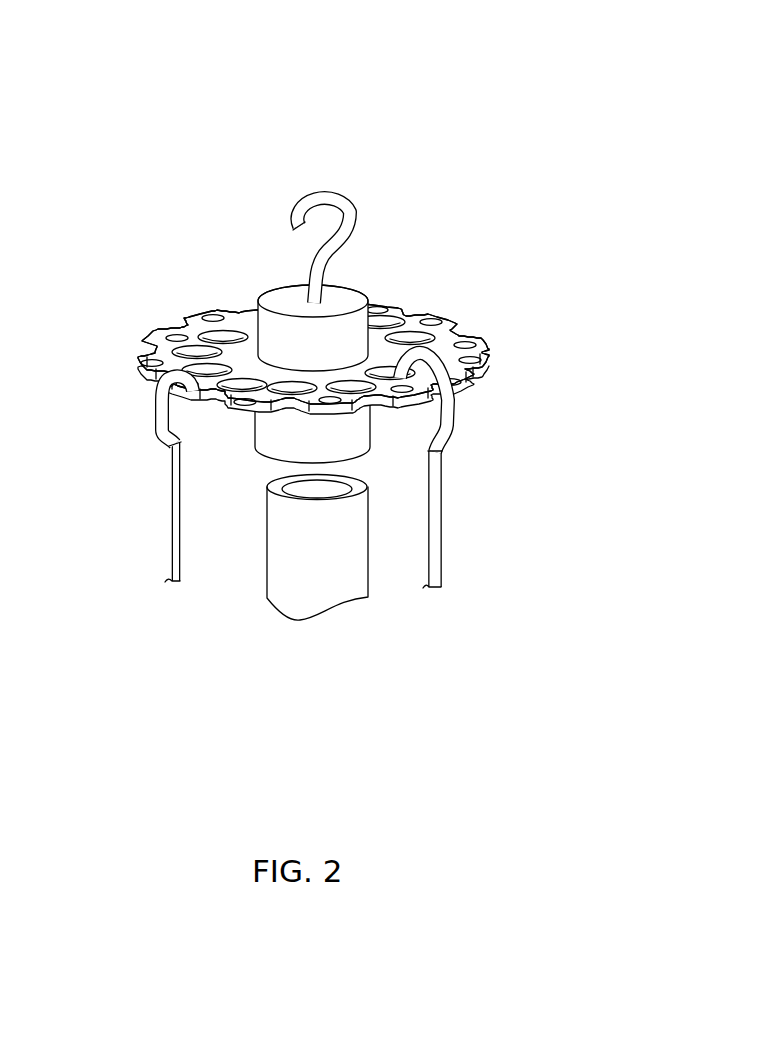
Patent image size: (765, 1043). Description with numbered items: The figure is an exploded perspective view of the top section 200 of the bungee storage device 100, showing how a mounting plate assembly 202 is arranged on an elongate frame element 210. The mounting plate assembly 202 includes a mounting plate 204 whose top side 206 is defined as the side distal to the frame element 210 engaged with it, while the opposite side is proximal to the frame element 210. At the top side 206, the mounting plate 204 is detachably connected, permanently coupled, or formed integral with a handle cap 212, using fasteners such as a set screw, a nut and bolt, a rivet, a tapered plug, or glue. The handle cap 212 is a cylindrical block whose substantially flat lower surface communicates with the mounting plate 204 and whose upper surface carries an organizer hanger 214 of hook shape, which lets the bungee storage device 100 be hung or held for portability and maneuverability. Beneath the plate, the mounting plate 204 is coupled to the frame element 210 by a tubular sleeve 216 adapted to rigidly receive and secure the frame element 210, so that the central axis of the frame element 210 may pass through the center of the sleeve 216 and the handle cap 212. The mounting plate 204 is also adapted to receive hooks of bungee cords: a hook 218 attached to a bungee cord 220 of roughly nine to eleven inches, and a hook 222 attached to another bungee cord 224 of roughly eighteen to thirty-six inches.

The bungee storage device 100 is at (379, 50).
The top section 200 is at (266, 143).
The mounting plate assembly 202 is at (329, 319).
The mounting plate 204 is at (157, 333).
The top side 206 is at (440, 263).
The frame element 210 is at (268, 558).
The handle cap 212 is at (270, 287).
The organizer hanger 214 is at (342, 180).
The tubular sleeve 216 is at (363, 455).
The hook 218 is at (158, 422).
The bungee cord 220 is at (170, 510).
The hook 222 is at (455, 410).
The bungee cord 224 is at (442, 512).